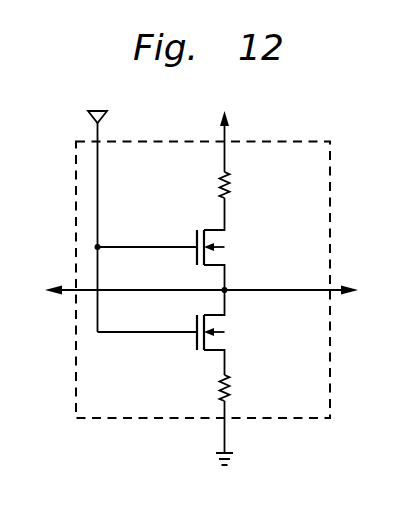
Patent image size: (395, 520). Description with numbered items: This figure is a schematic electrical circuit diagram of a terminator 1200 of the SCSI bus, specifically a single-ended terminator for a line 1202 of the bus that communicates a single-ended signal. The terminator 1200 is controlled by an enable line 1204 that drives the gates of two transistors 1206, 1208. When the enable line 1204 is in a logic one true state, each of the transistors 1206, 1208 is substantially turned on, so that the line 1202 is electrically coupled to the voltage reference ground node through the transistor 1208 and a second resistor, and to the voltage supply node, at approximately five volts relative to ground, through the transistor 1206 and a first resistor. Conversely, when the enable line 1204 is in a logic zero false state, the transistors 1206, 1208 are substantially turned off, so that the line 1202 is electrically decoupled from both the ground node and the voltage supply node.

The terminator 1200 is at (282, 141).
The line 1202 is at (277, 292).
The enable line 1204 is at (88, 118).
The transistor 1206 is at (196, 243).
The transistor 1208 is at (196, 338).